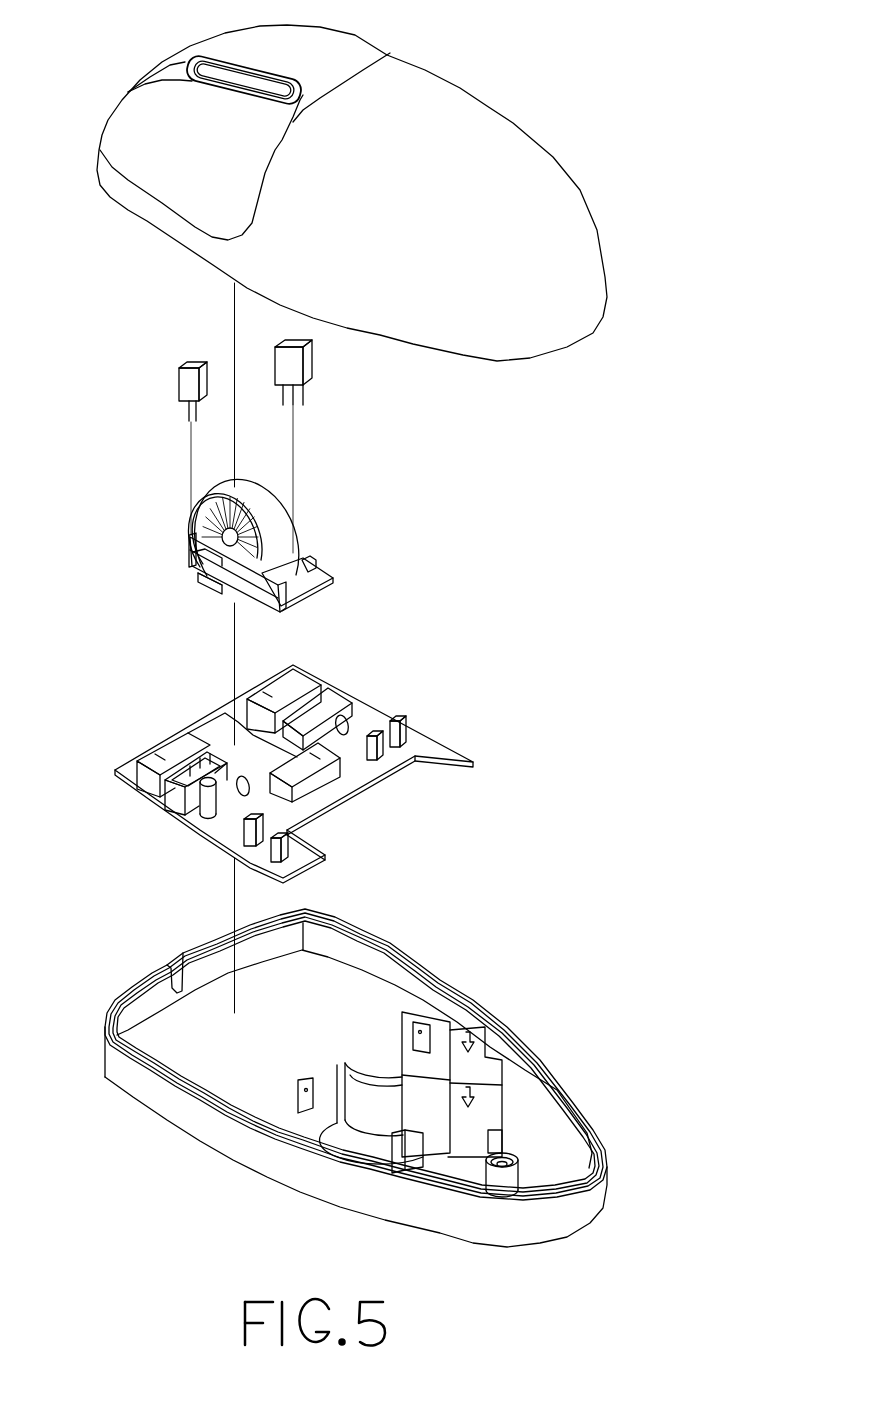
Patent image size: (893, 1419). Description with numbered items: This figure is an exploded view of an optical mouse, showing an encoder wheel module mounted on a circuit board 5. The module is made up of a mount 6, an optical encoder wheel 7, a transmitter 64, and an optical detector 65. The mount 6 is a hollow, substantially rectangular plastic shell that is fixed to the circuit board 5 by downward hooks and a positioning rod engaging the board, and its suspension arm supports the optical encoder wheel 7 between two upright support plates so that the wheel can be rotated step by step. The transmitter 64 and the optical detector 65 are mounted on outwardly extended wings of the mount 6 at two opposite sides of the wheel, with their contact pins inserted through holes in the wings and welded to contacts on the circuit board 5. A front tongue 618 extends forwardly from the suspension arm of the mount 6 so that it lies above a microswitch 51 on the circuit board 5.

The circuit board 5 is at (362, 772).
The microswitch 51 is at (313, 757).
The mount 6 is at (272, 604).
The front tongue 618 is at (306, 597).
The transmitter 64 is at (188, 382).
The optical detector 65 is at (307, 375).
The optical encoder wheel 7 is at (264, 501).